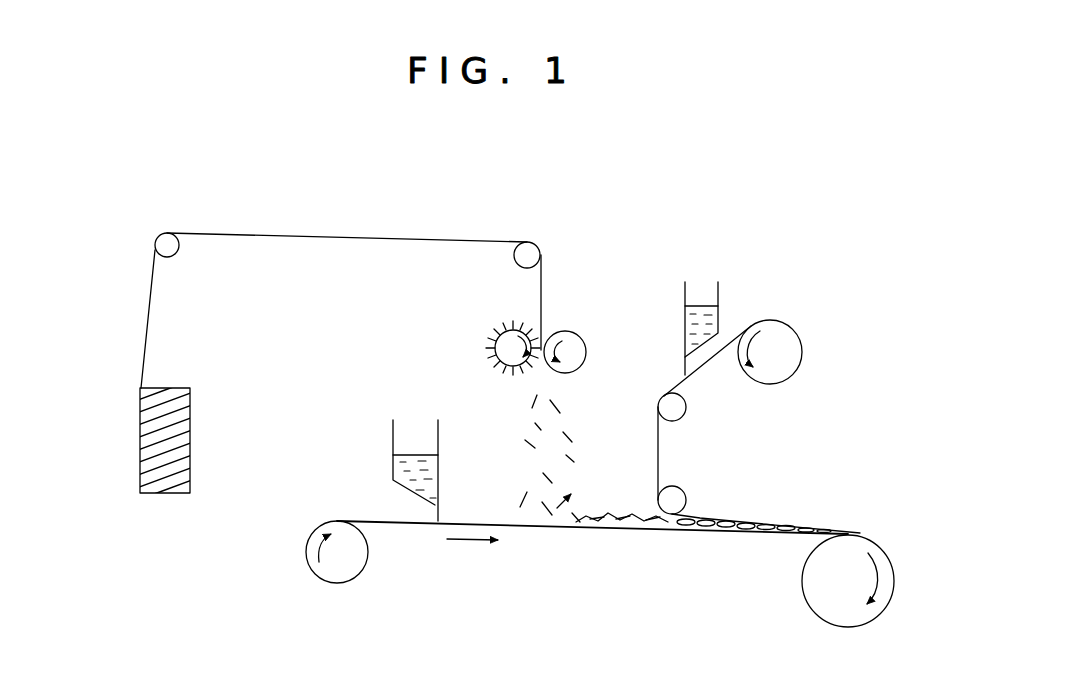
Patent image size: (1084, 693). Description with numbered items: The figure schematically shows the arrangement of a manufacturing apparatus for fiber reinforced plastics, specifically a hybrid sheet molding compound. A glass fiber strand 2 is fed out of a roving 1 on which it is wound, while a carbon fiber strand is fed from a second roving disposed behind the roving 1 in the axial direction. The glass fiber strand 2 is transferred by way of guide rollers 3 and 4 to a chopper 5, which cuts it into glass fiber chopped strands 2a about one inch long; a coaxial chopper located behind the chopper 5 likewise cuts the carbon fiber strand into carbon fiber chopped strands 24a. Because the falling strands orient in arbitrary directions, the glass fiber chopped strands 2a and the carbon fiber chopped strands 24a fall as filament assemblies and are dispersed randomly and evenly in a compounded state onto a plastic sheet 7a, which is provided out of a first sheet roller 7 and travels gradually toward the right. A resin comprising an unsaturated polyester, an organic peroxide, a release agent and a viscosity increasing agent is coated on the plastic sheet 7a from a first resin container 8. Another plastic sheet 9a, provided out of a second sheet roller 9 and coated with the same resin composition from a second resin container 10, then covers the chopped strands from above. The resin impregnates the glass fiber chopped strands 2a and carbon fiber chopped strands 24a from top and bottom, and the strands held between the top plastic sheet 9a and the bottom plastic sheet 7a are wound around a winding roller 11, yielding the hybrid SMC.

The roving 1 is at (136, 433).
The glass fiber strand 2 is at (148, 316).
The guide roller 3 is at (166, 249).
The guide roller 4 is at (531, 250).
The chopper 5 is at (485, 341).
The glass fiber chopped strands 2a is at (526, 449).
The carbon fiber chopped strands 24a is at (548, 436).
The first sheet roller 7 is at (322, 579).
The plastic sheet 7a is at (390, 523).
The first resin container 8 is at (390, 441).
The second sheet roller 9 is at (802, 345).
The plastic sheet 9a is at (659, 452).
The second resin container 10 is at (708, 282).
The winding roller 11 is at (889, 596).